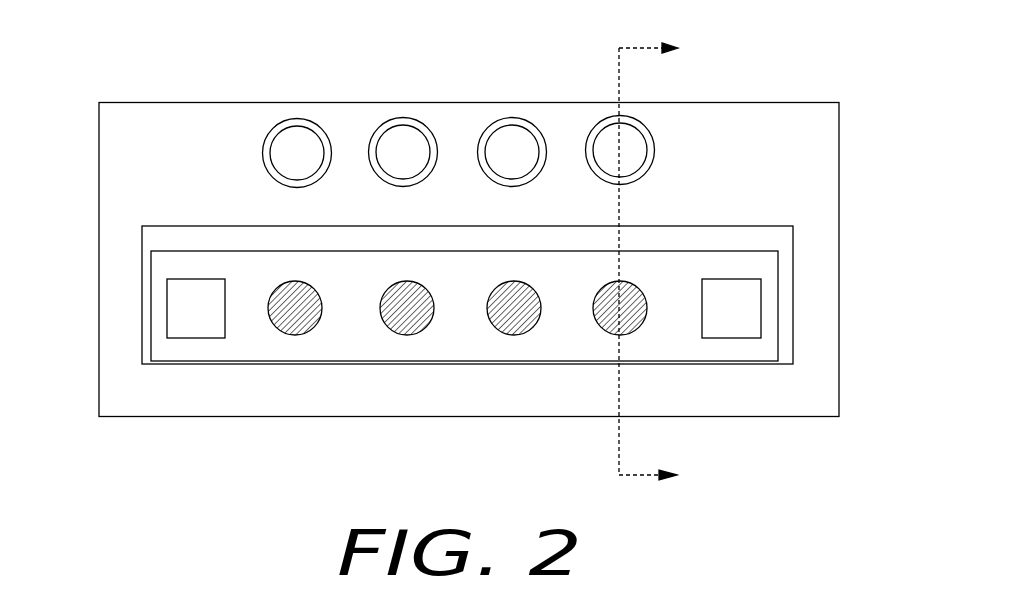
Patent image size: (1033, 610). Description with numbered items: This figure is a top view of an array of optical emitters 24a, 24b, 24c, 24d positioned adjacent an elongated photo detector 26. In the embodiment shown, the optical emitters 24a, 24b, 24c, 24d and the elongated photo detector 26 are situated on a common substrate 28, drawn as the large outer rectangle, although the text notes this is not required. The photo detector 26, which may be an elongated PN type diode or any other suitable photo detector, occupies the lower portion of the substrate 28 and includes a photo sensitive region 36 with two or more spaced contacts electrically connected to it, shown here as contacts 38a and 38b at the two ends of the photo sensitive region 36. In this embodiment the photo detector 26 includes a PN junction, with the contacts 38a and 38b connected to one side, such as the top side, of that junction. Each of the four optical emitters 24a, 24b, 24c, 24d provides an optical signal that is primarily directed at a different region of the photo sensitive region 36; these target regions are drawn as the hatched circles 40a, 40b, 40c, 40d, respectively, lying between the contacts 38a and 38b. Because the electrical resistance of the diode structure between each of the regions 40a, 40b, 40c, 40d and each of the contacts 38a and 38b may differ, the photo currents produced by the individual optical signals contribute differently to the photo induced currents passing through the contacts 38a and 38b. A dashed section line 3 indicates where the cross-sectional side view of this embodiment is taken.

The common substrate 28 is at (148, 124).
The elongated photo detector 26 is at (199, 390).
The photo sensitive region 36 is at (367, 331).
The contact 38a is at (180, 308).
The contact 38b is at (747, 313).
The optical emitter 24a is at (290, 130).
The optical emitter 24b is at (400, 138).
The optical emitter 24c is at (508, 138).
The optical emitter 24d is at (612, 143).
The region of photo detector 40a is at (295, 336).
The region of photo detector 40b is at (404, 328).
The region of photo detector 40c is at (513, 328).
The region of photo detector 40d is at (630, 298).
The section line 3- 3 is at (747, 42).